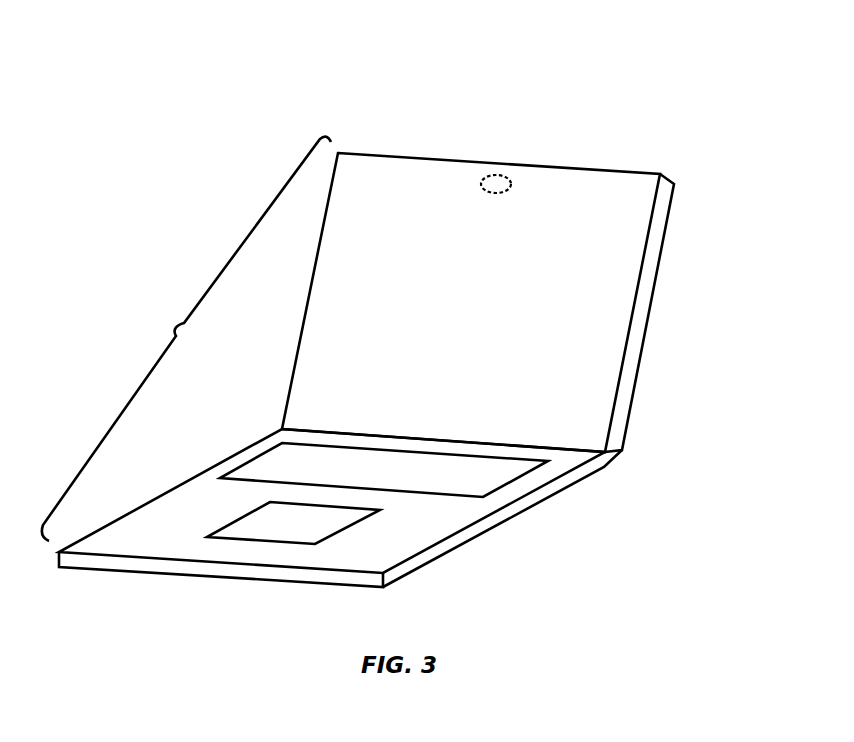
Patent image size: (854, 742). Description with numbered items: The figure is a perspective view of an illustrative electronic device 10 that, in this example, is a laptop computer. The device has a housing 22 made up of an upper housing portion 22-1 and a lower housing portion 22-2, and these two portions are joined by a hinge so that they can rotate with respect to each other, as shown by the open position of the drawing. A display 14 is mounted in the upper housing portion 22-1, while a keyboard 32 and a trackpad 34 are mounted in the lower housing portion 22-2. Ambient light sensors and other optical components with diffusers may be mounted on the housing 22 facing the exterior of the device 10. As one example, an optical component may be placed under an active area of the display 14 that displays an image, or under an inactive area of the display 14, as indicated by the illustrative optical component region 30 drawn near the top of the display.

The device 10 is at (657, 119).
The housing 22 is at (401, 368).
The upper housing portion 22-1 is at (670, 217).
The lower housing portion 22-2 is at (455, 550).
The display 14 is at (595, 323).
The optical component region 30 is at (499, 173).
The keyboard 32 is at (517, 478).
The trackpad 34 is at (268, 541).